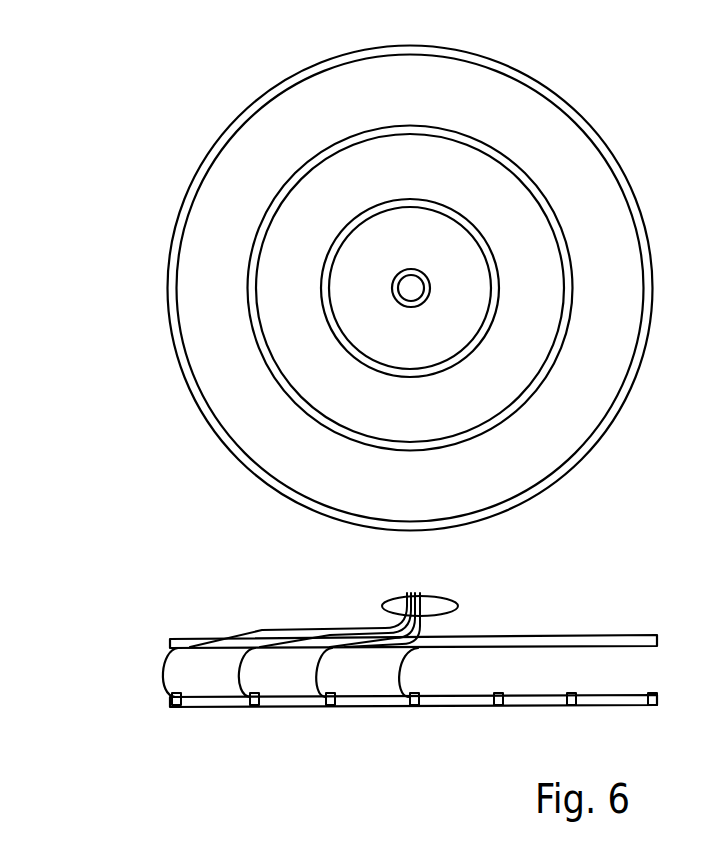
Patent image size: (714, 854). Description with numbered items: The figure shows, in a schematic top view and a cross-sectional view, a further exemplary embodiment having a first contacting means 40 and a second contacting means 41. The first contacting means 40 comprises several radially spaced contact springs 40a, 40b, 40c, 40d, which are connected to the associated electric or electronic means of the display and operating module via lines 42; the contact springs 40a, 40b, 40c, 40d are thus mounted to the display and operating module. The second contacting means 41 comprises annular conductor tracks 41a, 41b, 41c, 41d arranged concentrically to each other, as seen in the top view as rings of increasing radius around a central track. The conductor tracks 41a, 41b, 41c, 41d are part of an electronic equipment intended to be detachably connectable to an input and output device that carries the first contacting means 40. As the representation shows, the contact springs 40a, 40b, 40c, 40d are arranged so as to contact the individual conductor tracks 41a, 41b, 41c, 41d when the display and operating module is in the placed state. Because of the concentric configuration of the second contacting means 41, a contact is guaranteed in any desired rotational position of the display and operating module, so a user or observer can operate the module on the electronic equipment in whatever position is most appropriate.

The first contacting means 40 is at (458, 620).
The contact spring 40a is at (399, 673).
The contact spring 40b is at (317, 672).
The contact spring 40c is at (240, 670).
The contact spring 40d is at (166, 653).
The second contacting means 41 is at (200, 125).
The annular conductor track 41a is at (407, 269).
The annular conductor track 41b is at (421, 204).
The annular conductor track 41c is at (428, 131).
The annular conductor track 41d is at (466, 56).
The lines 42 is at (408, 593).